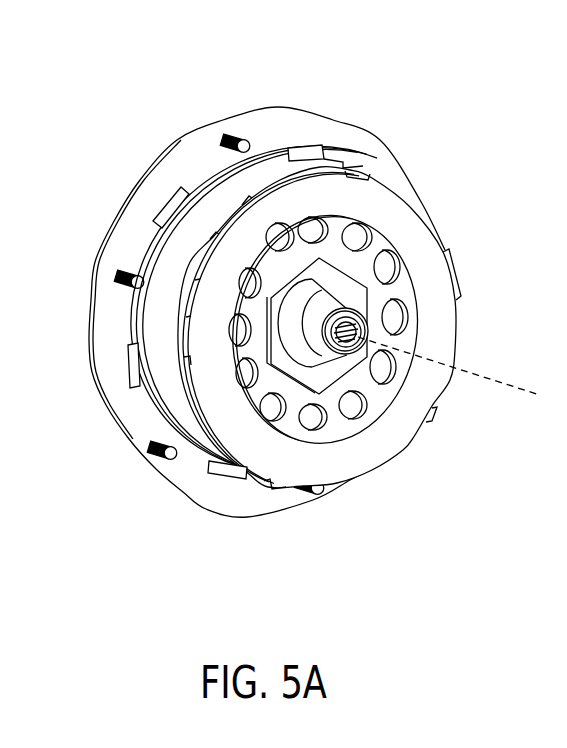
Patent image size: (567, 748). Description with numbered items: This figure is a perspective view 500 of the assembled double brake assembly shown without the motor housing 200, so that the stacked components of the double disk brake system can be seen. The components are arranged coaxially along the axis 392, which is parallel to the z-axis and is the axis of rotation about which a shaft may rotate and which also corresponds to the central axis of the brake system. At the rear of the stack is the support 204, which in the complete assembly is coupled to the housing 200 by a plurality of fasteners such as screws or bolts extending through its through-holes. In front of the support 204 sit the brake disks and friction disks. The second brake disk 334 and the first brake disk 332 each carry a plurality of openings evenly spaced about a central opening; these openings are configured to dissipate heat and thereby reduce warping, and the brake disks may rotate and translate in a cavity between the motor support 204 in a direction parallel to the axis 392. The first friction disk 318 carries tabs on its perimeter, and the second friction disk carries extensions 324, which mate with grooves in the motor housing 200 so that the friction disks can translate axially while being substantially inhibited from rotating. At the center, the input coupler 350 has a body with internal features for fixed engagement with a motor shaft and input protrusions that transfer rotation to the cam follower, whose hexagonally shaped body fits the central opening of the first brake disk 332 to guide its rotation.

The perspective view 500 is at (347, 88).
The housing 200 is at (168, 120).
The support 204 is at (323, 141).
The extensions 324 is at (172, 207).
The second brake disk 334 is at (170, 257).
The first friction disk 318 is at (393, 200).
The first brake disk 332 is at (389, 291).
The input coupler 350 is at (327, 349).
The axis 392 is at (510, 383).